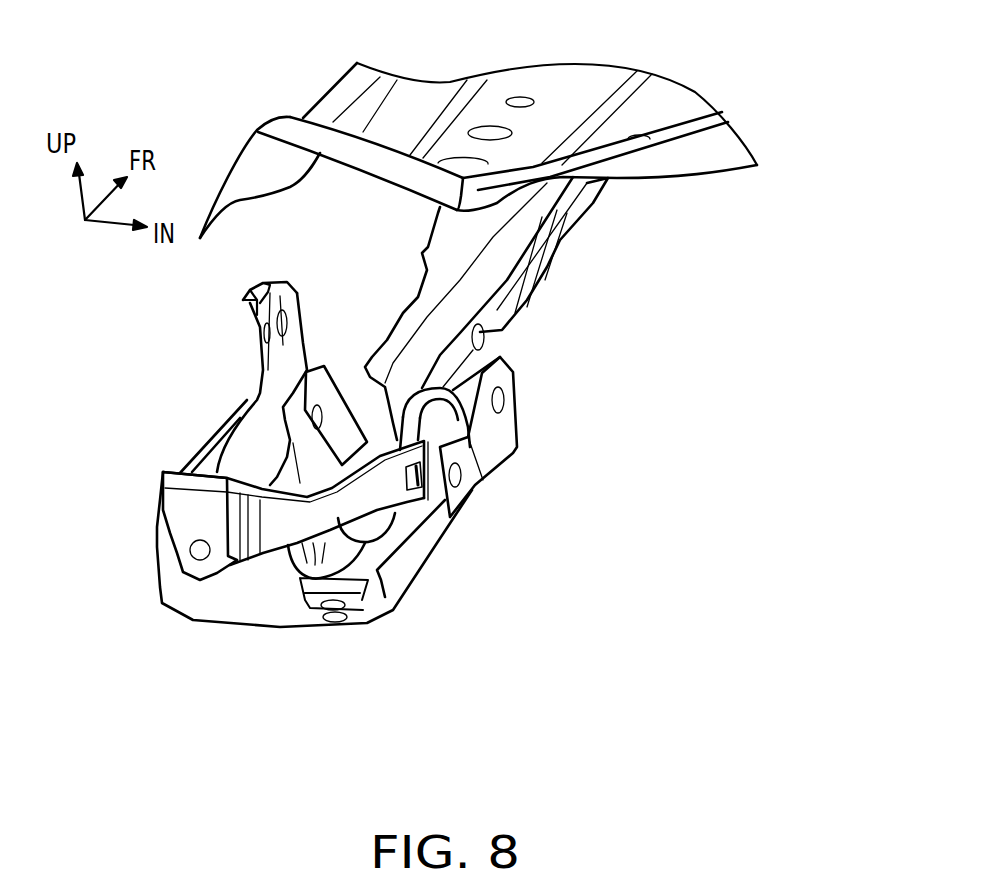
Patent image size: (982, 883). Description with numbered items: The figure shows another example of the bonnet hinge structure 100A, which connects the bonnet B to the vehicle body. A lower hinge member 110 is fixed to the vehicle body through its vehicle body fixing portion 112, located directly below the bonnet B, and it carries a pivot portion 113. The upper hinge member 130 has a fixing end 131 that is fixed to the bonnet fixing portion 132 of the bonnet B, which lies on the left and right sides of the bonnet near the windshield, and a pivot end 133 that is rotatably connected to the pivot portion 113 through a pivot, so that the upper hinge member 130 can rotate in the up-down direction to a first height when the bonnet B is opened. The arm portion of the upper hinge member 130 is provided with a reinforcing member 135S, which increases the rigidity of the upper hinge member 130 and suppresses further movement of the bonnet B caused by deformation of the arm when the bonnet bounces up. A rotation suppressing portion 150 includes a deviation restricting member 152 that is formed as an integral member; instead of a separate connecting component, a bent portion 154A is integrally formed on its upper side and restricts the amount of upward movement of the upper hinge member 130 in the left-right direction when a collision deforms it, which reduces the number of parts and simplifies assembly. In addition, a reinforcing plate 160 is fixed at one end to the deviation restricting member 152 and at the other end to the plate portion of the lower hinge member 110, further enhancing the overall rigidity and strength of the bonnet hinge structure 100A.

The bonnet hinge structure 100A is at (850, 600).
The bonnet B is at (360, 73).
The fixing end 131 is at (590, 88).
The bonnet fixing portion 132 is at (400, 117).
The upper hinge member 130 is at (398, 407).
The reinforcing member 135S is at (537, 275).
The rotation suppressing portion 150 is at (604, 347).
The bent portion 154A is at (427, 397).
The deviation restricting member 152 is at (507, 422).
The pivot portion 113 is at (267, 345).
The pivot end 133 is at (287, 297).
The lower hinge member 110 is at (223, 592).
The vehicle body fixing portion 112 is at (350, 607).
The reinforcing plate 160 is at (183, 523).